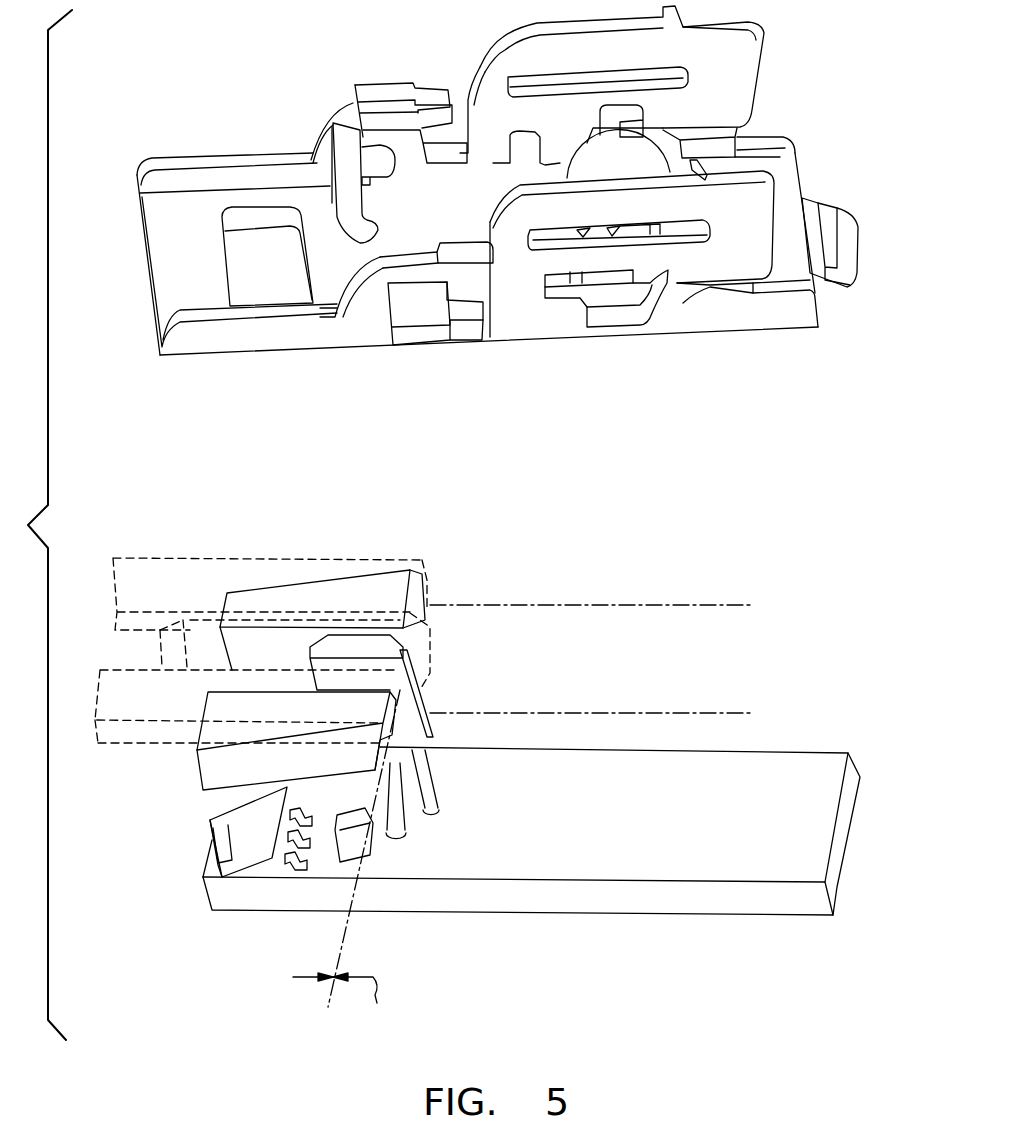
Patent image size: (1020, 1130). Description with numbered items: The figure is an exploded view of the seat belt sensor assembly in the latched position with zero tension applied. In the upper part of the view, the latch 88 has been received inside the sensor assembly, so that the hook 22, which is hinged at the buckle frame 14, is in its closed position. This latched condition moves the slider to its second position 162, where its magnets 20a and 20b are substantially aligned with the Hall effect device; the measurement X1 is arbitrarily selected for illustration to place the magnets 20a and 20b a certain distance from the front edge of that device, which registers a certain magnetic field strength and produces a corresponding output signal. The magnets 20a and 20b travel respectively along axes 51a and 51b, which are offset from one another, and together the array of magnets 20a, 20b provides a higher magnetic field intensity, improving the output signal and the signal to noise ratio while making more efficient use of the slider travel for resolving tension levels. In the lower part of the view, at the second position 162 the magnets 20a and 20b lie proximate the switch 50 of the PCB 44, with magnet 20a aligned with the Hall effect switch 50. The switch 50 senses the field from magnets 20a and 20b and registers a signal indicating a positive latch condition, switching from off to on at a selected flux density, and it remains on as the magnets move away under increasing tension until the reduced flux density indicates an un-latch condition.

The buckle frame 14 is at (215, 163).
The hook 22 is at (500, 177).
The latch 88 is at (788, 195).
The second position of the slider 162 is at (203, 563).
The magnet 20a is at (215, 768).
The magnet 20b is at (390, 582).
The axis 51a is at (600, 603).
The axis 51b is at (673, 712).
The Hall effect switch 50 is at (240, 813).
The PCB 44 is at (483, 867).
The measurement X1 is at (346, 867).